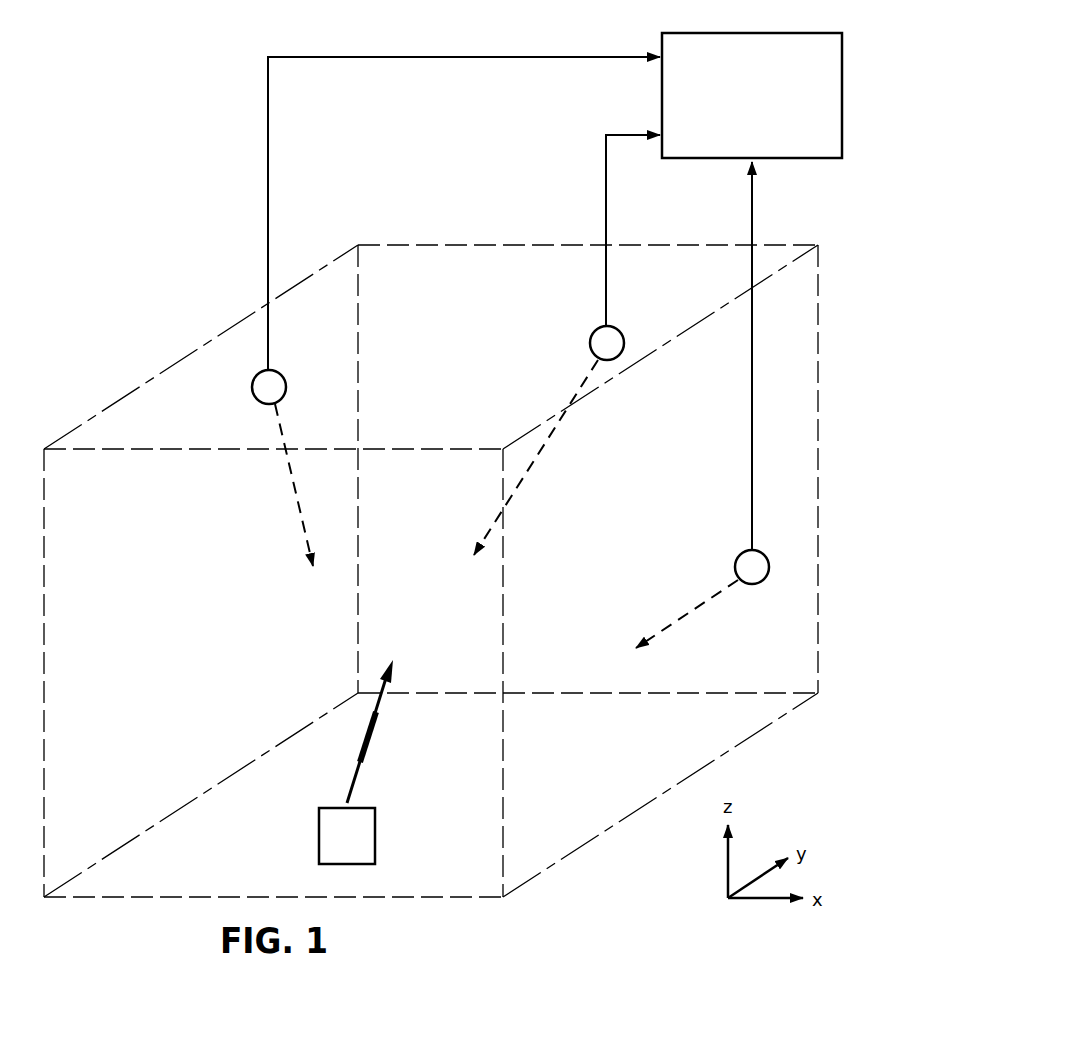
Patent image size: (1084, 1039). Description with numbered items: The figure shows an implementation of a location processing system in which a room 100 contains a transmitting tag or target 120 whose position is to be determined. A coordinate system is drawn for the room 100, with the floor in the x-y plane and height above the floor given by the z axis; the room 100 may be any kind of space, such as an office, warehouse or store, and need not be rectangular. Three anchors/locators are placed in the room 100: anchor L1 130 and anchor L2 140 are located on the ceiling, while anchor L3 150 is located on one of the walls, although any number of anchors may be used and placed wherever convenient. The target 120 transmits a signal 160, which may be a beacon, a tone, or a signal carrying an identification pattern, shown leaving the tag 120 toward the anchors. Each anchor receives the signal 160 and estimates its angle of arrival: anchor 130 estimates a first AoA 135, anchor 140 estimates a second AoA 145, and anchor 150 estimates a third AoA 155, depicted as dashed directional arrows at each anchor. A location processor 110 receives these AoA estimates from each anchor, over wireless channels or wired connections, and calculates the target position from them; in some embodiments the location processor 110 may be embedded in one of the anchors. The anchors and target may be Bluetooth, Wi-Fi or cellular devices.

The room 100 is at (120, 926).
The location processor 110 is at (774, 140).
The transmitting tag or target 120 is at (319, 836).
The anchor L1 130 is at (252, 386).
The first AoA 135 is at (466, 56).
The anchor L2 140 is at (590, 343).
The second AoA 145 is at (605, 192).
The anchor L3 150 is at (769, 565).
The third AoA 155 is at (752, 201).
The signal 160 is at (372, 743).